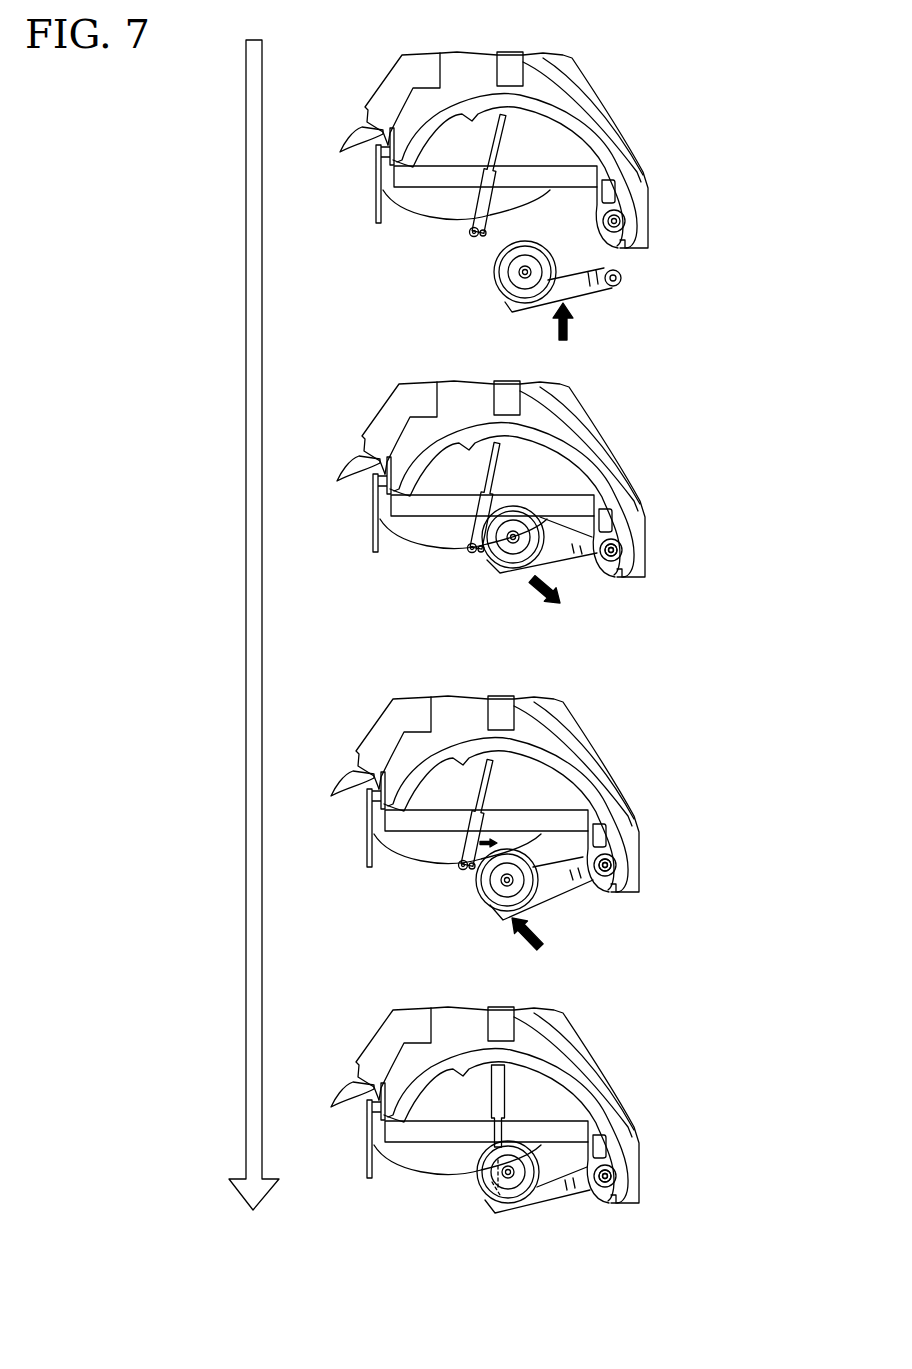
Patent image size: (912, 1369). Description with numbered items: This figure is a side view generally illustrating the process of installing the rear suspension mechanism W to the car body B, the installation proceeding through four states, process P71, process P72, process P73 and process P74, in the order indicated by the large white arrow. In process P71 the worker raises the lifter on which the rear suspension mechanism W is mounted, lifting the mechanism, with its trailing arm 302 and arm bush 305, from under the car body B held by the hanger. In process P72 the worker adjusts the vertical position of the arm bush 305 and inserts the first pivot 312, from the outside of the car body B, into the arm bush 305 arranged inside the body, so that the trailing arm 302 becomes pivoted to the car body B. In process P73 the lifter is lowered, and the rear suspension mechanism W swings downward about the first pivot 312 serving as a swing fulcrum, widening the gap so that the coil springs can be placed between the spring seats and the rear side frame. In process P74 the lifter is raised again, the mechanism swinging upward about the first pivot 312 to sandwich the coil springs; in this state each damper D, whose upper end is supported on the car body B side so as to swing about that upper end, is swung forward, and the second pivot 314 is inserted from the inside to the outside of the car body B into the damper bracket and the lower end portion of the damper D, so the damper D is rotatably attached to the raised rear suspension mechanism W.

The car body B is at (601, 72).
The process P71 is at (668, 116).
The process P72 is at (668, 459).
The process P73 is at (668, 762).
The process P74 is at (668, 1108).
The damper D is at (474, 198).
The rear suspension mechanism W is at (503, 313).
The trailing arm 302 is at (573, 293).
The arm bush 305 is at (622, 284).
The first pivot 312 is at (618, 550).
The second pivot 314 is at (483, 1188).